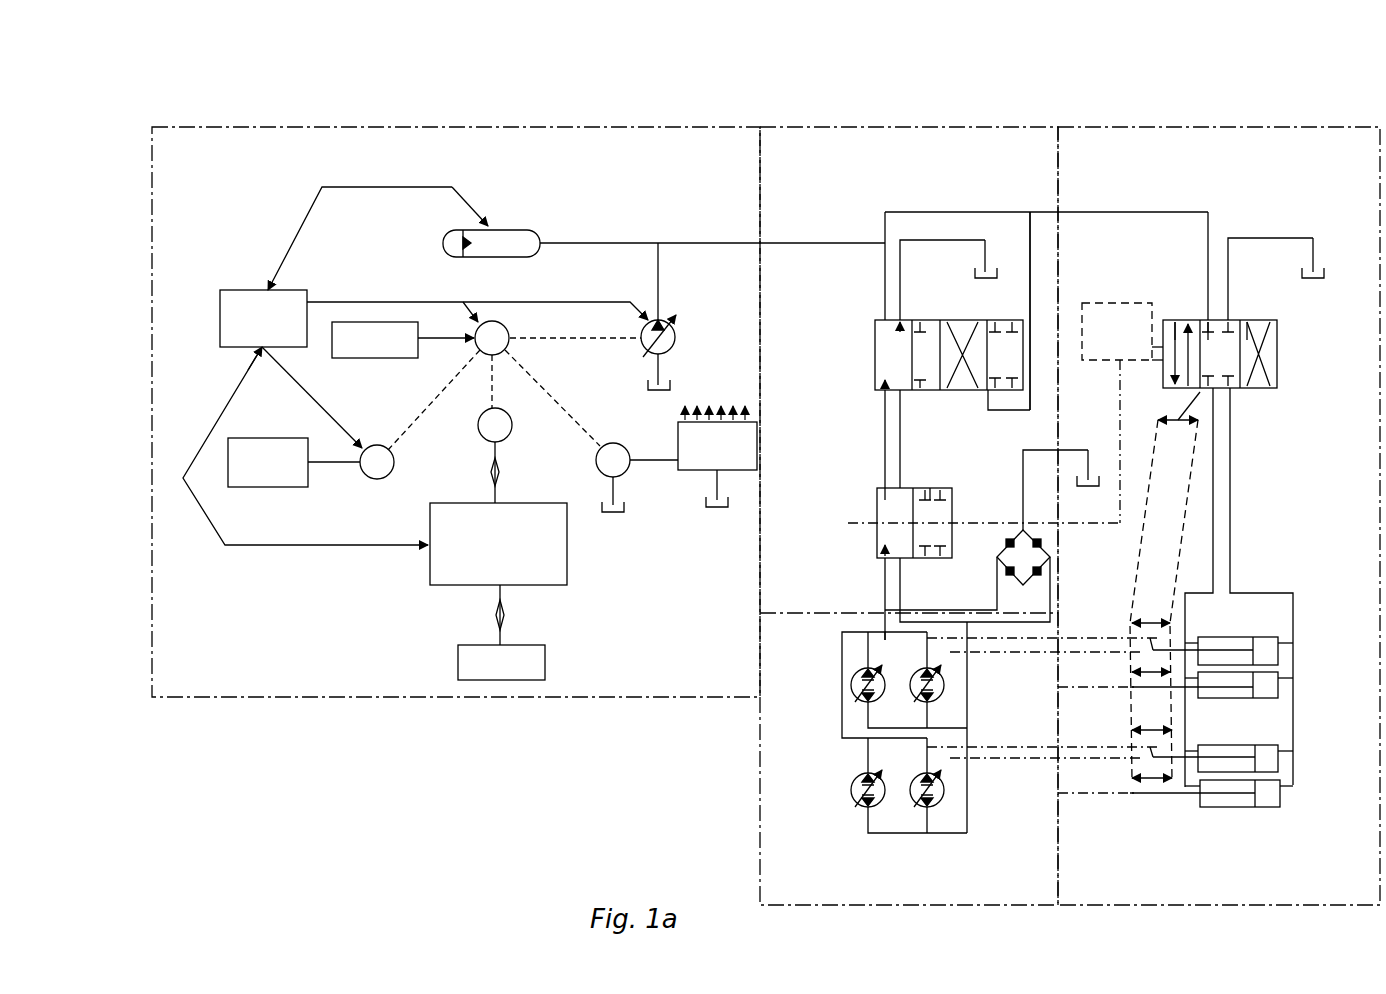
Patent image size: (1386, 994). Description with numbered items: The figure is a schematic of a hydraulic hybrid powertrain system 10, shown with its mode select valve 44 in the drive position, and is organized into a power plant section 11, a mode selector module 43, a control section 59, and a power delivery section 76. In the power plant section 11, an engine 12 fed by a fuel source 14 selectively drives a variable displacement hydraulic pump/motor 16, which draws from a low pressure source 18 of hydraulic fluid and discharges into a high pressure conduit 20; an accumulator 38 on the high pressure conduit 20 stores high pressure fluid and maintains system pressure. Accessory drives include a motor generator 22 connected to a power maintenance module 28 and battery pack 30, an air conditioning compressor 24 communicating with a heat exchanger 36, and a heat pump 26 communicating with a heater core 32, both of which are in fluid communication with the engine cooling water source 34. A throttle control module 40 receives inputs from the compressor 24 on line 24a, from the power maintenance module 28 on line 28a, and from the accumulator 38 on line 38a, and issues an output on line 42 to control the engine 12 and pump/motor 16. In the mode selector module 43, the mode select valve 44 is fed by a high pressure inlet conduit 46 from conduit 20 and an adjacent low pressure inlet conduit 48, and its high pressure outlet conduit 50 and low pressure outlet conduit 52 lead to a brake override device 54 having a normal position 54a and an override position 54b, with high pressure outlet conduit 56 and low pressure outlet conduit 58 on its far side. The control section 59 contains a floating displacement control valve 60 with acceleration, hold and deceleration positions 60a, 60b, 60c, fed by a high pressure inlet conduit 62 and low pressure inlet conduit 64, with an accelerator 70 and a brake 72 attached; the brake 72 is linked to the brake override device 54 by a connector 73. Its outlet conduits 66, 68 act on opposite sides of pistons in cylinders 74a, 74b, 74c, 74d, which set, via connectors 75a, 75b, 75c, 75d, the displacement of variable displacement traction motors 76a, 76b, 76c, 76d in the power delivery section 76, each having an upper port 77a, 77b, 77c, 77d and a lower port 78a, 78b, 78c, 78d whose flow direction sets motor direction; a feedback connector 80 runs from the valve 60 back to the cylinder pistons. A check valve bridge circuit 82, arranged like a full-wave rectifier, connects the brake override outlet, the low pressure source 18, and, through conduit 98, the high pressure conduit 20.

The hydraulic hybrid powertrain system 10 is at (246, 85).
The power plant section 11 is at (700, 159).
The engine 12 is at (510, 348).
The fuel source 14 is at (357, 358).
The variable displacement hydraulic pump/motor 16 is at (676, 340).
The low pressure source of hydraulic fluid 18 is at (672, 392).
The high pressure conduit 20 is at (705, 243).
The motor generator 22 is at (478, 432).
The air conditioning compressor 24 is at (375, 480).
The signal line 24a is at (300, 386).
The heat pump 26 is at (598, 470).
The power maintenance module 28 is at (567, 575).
The signal line 28a is at (210, 432).
The battery pack 30 is at (545, 657).
The heater core 32 is at (688, 472).
The cooling water source 34 is at (712, 518).
The heat exchanger 36 is at (283, 487).
The accumulator 38 is at (535, 222).
The signal line 38a is at (388, 187).
The throttle control module 40 is at (220, 300).
The output signal line 42 is at (410, 302).
The mode selector module 43 is at (795, 169).
The mode select valve 44 is at (872, 358).
The high pressure inlet conduit 46 is at (885, 265).
The low pressure inlet conduit 48 is at (900, 282).
The high pressure outlet conduit 50 is at (885, 412).
The low pressure outlet conduit 52 is at (900, 412).
The brake override device 54 is at (874, 535).
The normal position 54a is at (885, 490).
The override position 54b is at (930, 488).
The high pressure outlet conduit 56 is at (885, 580).
The low pressure outlet conduit 58 is at (900, 580).
The control section 59 is at (1332, 164).
The displacement control valve 60 is at (1282, 375).
The acceleration position 60a is at (1180, 318).
The hold position 60b is at (1217, 318).
The deceleration position 60c is at (1254, 318).
The high pressure inlet conduit 62 is at (1208, 255).
The low pressure inlet conduit 64 is at (1228, 272).
The high pressure outlet conduit 66 is at (1213, 545).
The low pressure outlet conduit 68 is at (1230, 548).
The accelerator 70 is at (1066, 318).
The brake 72 is at (1068, 368).
The connector 73 is at (1112, 408).
The cylinder 74a is at (1265, 637).
The cylinder 74b is at (1258, 700).
The cylinder 74c is at (1253, 745).
The cylinder 74d is at (1262, 807).
The connector 75a is at (1043, 655).
The connector 75b is at (1045, 688).
The connector 75c is at (1043, 762).
The connector 75d is at (1045, 798).
The power delivery section 76 is at (1010, 859).
The traction motor 76a is at (850, 686).
The traction motor 76b is at (946, 690).
The traction motor 76c is at (852, 800).
The traction motor 76d is at (926, 812).
The upper port 77a is at (842, 645).
The upper port 77b is at (925, 642).
The upper port 77c is at (866, 758).
The upper port 77d is at (930, 755).
The lower port 78a is at (868, 714).
The lower port 78b is at (927, 718).
The lower port 78c is at (868, 825).
The lower port 78d is at (930, 823).
The feedback connector 80 is at (1146, 508).
The check valve bridge circuit 82 is at (1052, 552).
The conduit 98 is at (1030, 232).